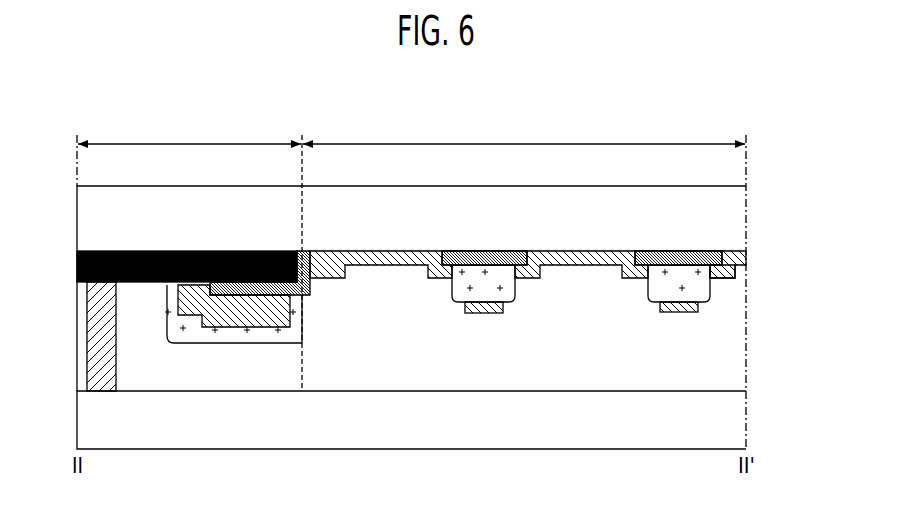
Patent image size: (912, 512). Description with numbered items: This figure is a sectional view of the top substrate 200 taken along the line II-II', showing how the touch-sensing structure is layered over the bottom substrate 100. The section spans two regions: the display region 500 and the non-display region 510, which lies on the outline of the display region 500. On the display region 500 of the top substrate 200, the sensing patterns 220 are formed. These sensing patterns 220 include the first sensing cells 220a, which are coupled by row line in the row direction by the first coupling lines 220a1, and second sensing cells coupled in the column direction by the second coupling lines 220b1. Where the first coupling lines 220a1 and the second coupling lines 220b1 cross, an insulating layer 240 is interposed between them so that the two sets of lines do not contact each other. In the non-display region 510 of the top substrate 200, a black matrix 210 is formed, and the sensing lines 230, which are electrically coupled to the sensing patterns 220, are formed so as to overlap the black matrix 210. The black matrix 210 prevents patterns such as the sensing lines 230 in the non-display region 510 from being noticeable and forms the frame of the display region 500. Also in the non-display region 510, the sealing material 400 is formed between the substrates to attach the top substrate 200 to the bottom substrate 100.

The bottom substrate 100 is at (746, 421).
The top substrate 200 is at (746, 214).
The black matrix 210 is at (77, 264).
The sensing patterns 220 is at (589, 281).
The first sensing cells 220a is at (733, 270).
The first coupling lines 220a1 is at (723, 251).
The second coupling lines 220b1 is at (698, 308).
The sensing lines 230 is at (178, 289).
The insulating layer 240 is at (183, 328).
The sealing material 400 is at (92, 360).
The display region 500 is at (524, 131).
The non-display region 510 is at (189, 131).